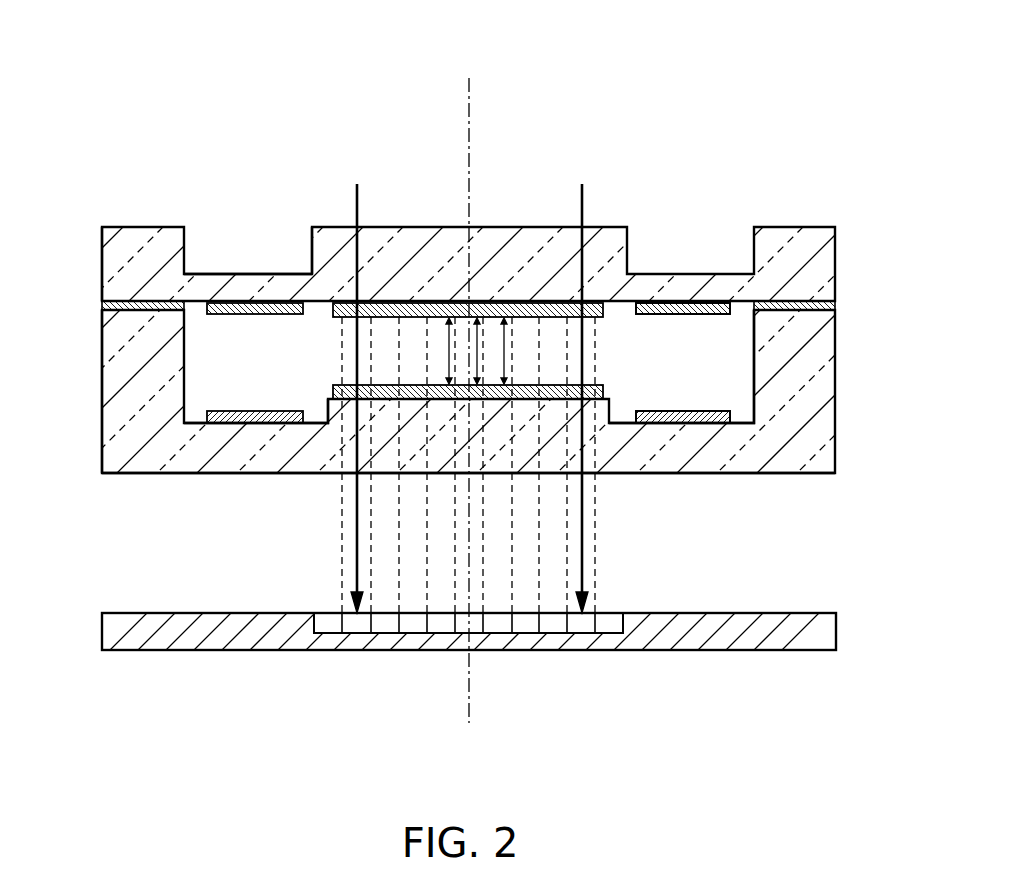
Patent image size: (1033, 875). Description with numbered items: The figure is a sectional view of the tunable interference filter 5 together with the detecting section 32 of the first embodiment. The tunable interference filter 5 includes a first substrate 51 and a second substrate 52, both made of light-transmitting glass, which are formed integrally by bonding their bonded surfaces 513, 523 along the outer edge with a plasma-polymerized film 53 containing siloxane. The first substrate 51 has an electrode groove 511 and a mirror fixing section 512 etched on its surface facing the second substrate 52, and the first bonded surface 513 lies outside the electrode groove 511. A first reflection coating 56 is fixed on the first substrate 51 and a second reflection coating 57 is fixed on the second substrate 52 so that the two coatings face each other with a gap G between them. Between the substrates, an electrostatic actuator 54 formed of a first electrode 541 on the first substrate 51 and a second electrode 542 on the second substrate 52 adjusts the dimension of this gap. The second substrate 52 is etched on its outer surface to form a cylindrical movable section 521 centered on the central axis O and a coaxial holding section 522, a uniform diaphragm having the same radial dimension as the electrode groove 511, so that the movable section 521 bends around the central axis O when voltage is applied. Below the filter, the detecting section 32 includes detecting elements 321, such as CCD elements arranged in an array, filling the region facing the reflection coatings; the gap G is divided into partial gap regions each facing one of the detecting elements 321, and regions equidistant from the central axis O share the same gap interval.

The central axis O is at (467, 382).
The tunable interference filter 5 is at (836, 464).
The first substrate 51 is at (836, 357).
The electrode groove 511 is at (733, 410).
The mirror fixing section 512 is at (326, 407).
The first bonded surface 513 is at (130, 310).
The second substrate 52 is at (836, 247).
The movable section 521 is at (308, 238).
The holding section 522 is at (219, 273).
The bonded surface 523 is at (143, 303).
The plasma-polymerized film 53 is at (101, 304).
The electrostatic actuator 54 is at (685, 132).
The first electrode 541 is at (662, 410).
The second electrode 542 is at (702, 302).
The first reflection coating 56 is at (604, 392).
The second reflection coating 57 is at (604, 316).
The gap G is at (310, 349).
The detecting section 32 is at (104, 652).
The detecting elements 321 is at (327, 627).